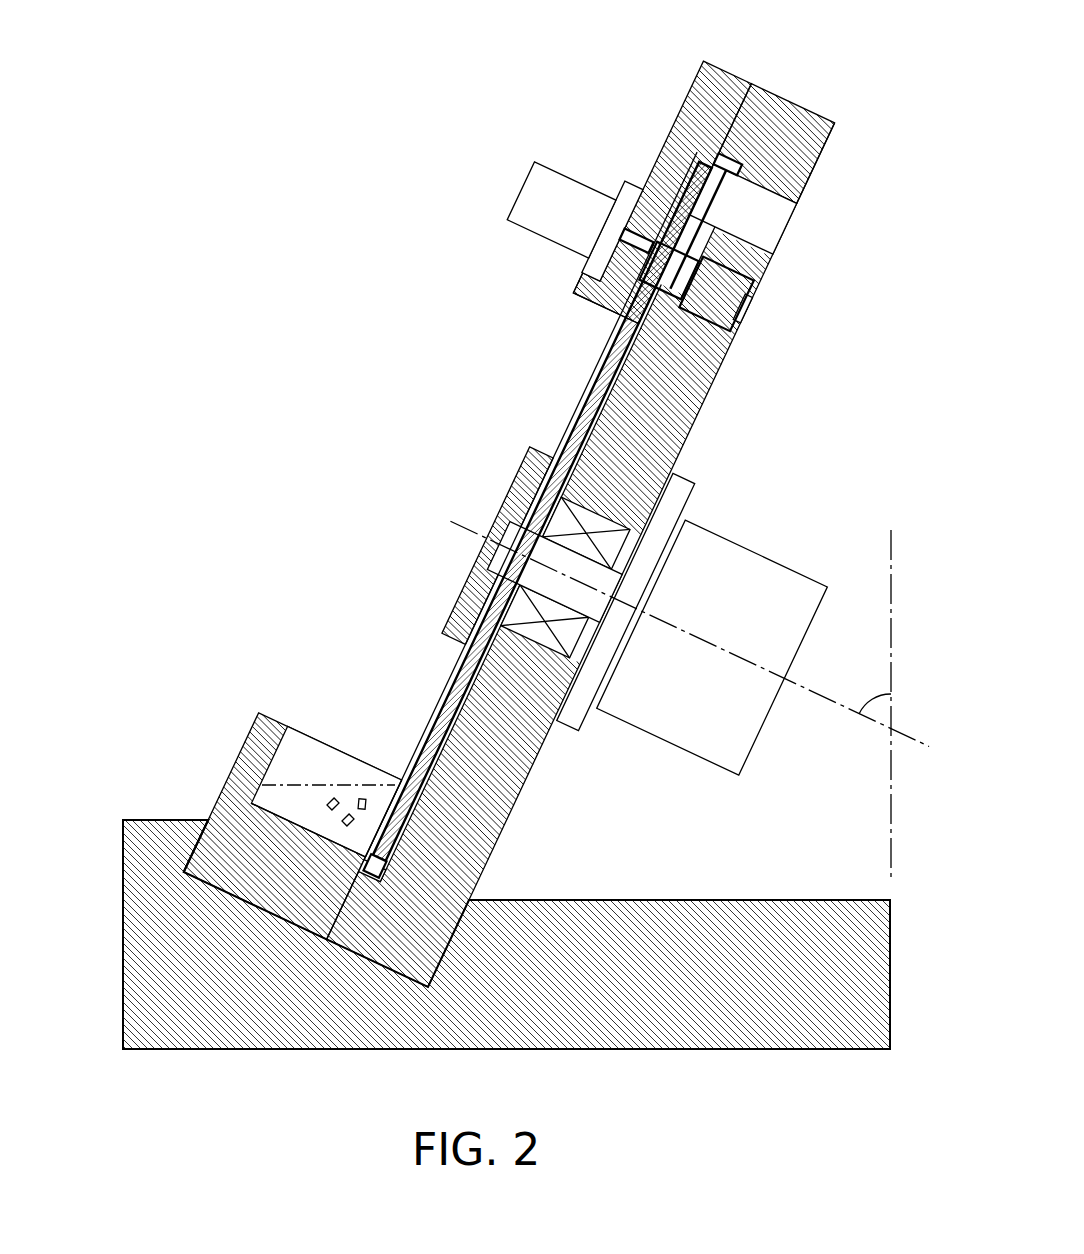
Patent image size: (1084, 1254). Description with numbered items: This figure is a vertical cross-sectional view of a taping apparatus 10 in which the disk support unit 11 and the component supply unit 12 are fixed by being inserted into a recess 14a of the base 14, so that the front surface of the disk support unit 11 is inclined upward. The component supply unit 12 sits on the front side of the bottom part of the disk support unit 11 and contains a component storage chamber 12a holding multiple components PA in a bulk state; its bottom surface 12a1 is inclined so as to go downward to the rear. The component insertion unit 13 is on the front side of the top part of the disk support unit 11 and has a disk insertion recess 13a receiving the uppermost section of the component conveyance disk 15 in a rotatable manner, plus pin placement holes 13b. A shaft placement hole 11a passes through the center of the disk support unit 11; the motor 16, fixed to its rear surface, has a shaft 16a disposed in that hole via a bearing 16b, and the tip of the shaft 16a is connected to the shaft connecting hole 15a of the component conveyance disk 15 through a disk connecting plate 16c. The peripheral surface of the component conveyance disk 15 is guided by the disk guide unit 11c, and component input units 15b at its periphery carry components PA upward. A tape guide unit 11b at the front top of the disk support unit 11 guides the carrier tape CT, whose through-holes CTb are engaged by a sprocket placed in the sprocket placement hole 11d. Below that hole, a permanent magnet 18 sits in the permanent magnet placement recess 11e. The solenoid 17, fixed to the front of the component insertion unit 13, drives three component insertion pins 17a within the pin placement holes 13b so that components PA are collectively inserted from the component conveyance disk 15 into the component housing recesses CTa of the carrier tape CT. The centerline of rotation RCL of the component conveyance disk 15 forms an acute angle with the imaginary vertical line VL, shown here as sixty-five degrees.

The processing apparatus 10 is at (705, 58).
The disk support unit 11 is at (510, 780).
The shaft placement hole 11a is at (602, 520).
The tape guide unit 11b is at (800, 162).
The disk guide unit 11c is at (400, 880).
The sprocket placement hole 11d is at (775, 230).
The permanent magnet placement recess 11e is at (745, 310).
The component supply unit 12 is at (262, 735).
The component storage chamber 12a is at (285, 762).
The bottom surface 12a1 is at (262, 812).
The component insertion unit 13 is at (692, 105).
The disk insertion recess 13a is at (613, 305).
The pin placement hole 13b is at (625, 212).
The base 14 is at (836, 905).
The recess 14a is at (152, 855).
The component conveyance disk 15 is at (448, 714).
The shaft connecting hole 15a is at (468, 600).
The component input unit 15b is at (390, 865).
The motor 16 is at (788, 582).
The shaft 16a is at (505, 525).
The bearing 16b is at (598, 690).
The disk connecting plate 16c is at (522, 465).
The solenoid 17 is at (535, 185).
The component insertion pin 17a is at (618, 240).
The permanent magnet 18 is at (730, 290).
The carrier tape CT is at (745, 172).
The component housing recess CTa is at (703, 320).
The through-hole CTb is at (688, 195).
The component PA is at (338, 795).
The centerline of rotation RCL is at (818, 705).
The imaginary vertical line VL is at (893, 647).